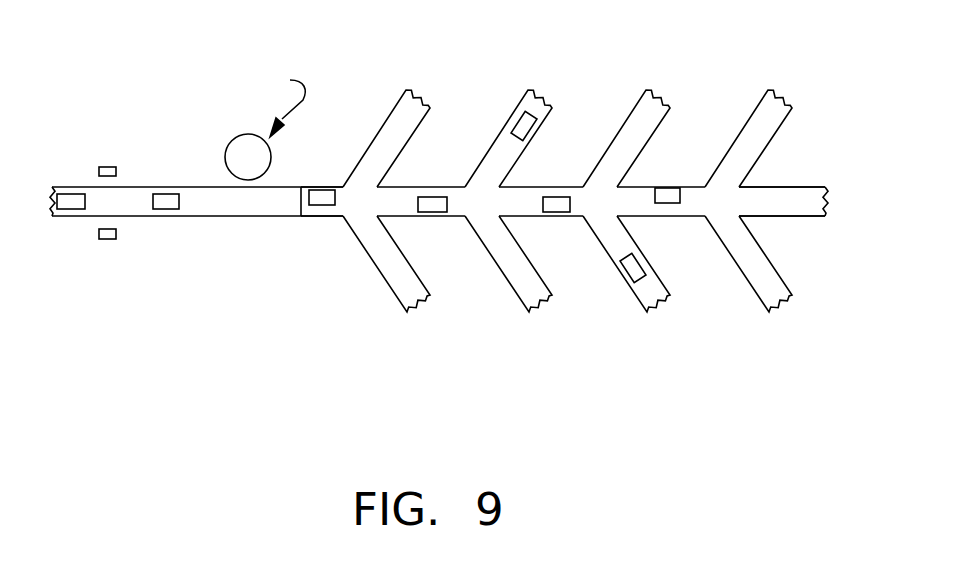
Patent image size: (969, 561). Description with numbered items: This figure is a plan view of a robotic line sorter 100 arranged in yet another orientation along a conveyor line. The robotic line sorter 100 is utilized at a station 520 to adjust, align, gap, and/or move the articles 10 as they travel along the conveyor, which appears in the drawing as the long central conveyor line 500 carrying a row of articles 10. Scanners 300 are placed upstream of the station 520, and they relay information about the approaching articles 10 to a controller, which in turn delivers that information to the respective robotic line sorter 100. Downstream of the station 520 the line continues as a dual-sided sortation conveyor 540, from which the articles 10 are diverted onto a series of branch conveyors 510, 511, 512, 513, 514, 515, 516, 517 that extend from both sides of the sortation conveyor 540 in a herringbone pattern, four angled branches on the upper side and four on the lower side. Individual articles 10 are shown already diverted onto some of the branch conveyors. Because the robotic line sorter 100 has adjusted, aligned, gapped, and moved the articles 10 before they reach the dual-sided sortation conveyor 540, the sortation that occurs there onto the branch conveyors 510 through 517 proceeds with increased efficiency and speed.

The articles 10 is at (163, 210).
The robotic line sorter 100 is at (237, 138).
The scanners 300 is at (108, 167).
The carrier strip 500 is at (248, 217).
The branch conveyor 510 is at (389, 109).
The branch conveyor 511 is at (510, 109).
The branch conveyor 512 is at (629, 109).
The branch conveyor 513 is at (751, 109).
The branch conveyor 514 is at (390, 293).
The branch conveyor 515 is at (512, 293).
The branch conveyor 516 is at (630, 294).
The branch conveyor 517 is at (751, 294).
The station 520 is at (275, 102).
The dual-sided sortation conveyor 540 is at (327, 216).